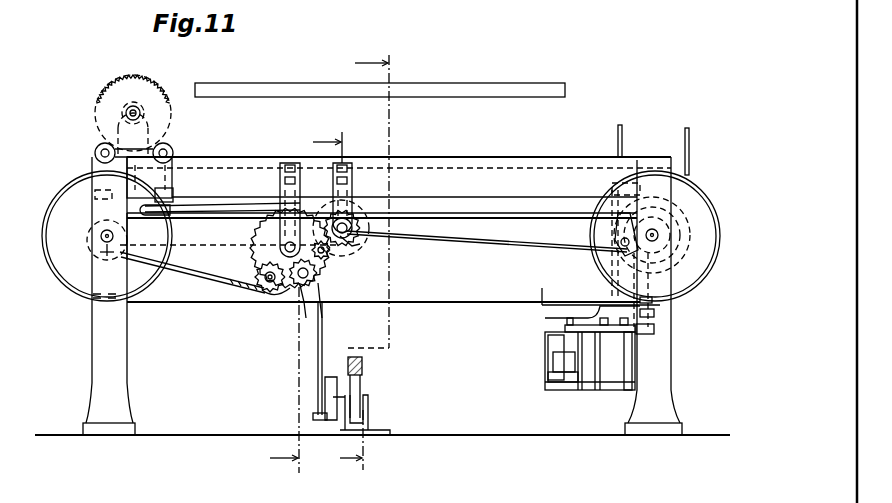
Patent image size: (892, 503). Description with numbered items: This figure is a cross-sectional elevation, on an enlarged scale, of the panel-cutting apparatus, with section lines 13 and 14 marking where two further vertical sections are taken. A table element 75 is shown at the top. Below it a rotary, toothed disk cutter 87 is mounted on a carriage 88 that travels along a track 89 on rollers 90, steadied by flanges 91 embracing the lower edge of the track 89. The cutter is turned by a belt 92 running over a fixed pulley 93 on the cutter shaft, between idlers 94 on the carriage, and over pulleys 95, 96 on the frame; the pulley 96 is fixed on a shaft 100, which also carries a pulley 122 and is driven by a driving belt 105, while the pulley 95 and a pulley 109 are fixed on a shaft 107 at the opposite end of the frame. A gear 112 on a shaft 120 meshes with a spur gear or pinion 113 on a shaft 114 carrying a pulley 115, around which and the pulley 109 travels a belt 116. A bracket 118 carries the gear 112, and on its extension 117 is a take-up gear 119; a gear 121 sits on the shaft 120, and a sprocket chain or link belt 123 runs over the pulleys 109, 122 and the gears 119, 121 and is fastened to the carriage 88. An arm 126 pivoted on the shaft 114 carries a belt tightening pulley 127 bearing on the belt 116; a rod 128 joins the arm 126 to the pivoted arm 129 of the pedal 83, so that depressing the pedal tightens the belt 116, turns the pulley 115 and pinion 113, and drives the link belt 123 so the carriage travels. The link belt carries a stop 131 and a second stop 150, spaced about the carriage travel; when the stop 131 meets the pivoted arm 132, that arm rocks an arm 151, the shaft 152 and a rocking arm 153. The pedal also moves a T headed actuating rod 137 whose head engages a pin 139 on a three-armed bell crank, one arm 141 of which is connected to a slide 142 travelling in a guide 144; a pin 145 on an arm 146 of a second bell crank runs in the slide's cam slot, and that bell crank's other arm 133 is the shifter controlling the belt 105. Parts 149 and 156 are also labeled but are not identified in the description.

The section line 13— 13 is at (309, 307).
The section line 14— 14 is at (368, 260).
The table element 75 is at (500, 83).
The pedal 83 is at (363, 366).
The rotary toothed disk cutter 87 is at (133, 116).
The carriage 88 is at (172, 189).
The track 89 is at (399, 187).
The rollers 90 is at (98, 146).
The flanges 91 is at (100, 200).
The belt 92 is at (447, 301).
The fixed pulley 93 is at (144, 113).
The idlers 94 is at (101, 154).
The pulley 95 is at (62, 190).
The pulley 96 is at (697, 268).
The shaft 100 is at (659, 235).
The driving belt 105 is at (690, 158).
The shaft 107 is at (101, 236).
The fixed pulley 109 is at (107, 249).
The gear 112 is at (235, 241).
The spur gear 113 is at (355, 229).
The shaft 114 is at (352, 240).
The pulley 115 is at (358, 212).
The belt 116 is at (247, 205).
The extension 117 is at (258, 274).
The bracket 118 is at (300, 172).
The take-up gear 119 is at (270, 296).
The shaft 120 is at (262, 232).
The gear 121 is at (326, 256).
The pulley 122 is at (665, 242).
The sprocket chain 123 is at (210, 280).
The pivoted arm 126 is at (318, 275).
The belt tightening pulley 127 is at (304, 302).
The rod 128 is at (326, 350).
The pivoted arm 129 is at (330, 397).
The stop 131 is at (143, 236).
The pivoted arm 132 is at (615, 232).
The shifter arm 133 is at (605, 300).
The T headed actuating rod 137 is at (635, 384).
The pin 139 is at (585, 319).
The arm 141 is at (597, 372).
The slide 142 is at (552, 380).
The guide 144 is at (547, 345).
The pin 145 is at (555, 367).
The arm 146 is at (579, 372).
The shaft 149 is at (630, 345).
The stop 150 is at (630, 210).
The arm 151 is at (617, 280).
The shaft 152 is at (654, 299).
The rocking arm 153 is at (656, 314).
The block 156 is at (656, 332).